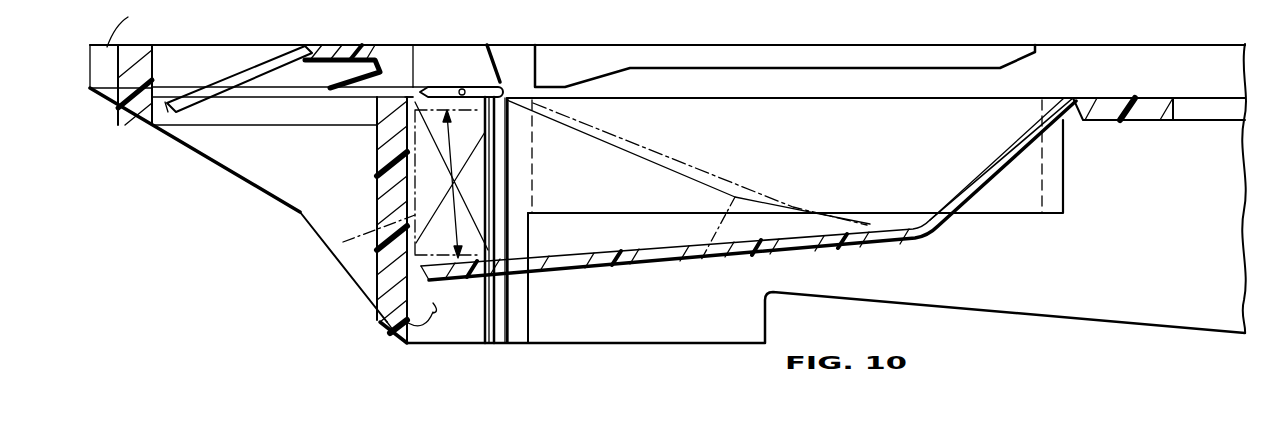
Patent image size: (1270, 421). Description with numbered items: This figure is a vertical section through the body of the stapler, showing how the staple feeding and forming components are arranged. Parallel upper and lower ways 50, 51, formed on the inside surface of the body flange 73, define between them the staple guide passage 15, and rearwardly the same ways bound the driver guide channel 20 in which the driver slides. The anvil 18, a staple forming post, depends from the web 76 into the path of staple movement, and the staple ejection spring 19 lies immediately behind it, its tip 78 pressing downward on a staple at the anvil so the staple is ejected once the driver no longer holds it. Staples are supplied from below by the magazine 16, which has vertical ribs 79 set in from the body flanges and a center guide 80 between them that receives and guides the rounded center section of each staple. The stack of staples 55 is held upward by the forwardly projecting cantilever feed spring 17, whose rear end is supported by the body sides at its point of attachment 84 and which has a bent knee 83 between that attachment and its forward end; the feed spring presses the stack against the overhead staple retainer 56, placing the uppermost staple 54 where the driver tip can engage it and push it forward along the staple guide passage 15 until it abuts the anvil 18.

The staple guide passage 15 is at (285, 90).
The magazine 16 is at (447, 330).
The feed spring 17 is at (735, 246).
The anvil 18 is at (132, 98).
The staple ejection spring 19 is at (237, 65).
The driver guide channel 20 is at (1000, 83).
The upper driver guide way 50 is at (192, 56).
The lower driver guide way 51 is at (232, 110).
The uppermost staple 54 is at (500, 82).
The stack of staples 55 is at (380, 225).
The staple retainer 56 is at (445, 58).
The body flange 73 is at (1075, 291).
The web 76 is at (143, 45).
The tip of staple ejection spring 78 is at (163, 102).
The vertical rib 79 is at (385, 320).
The center guide 80 is at (395, 162).
The bent knee 83 is at (940, 226).
The point of attachment 84 is at (1073, 113).